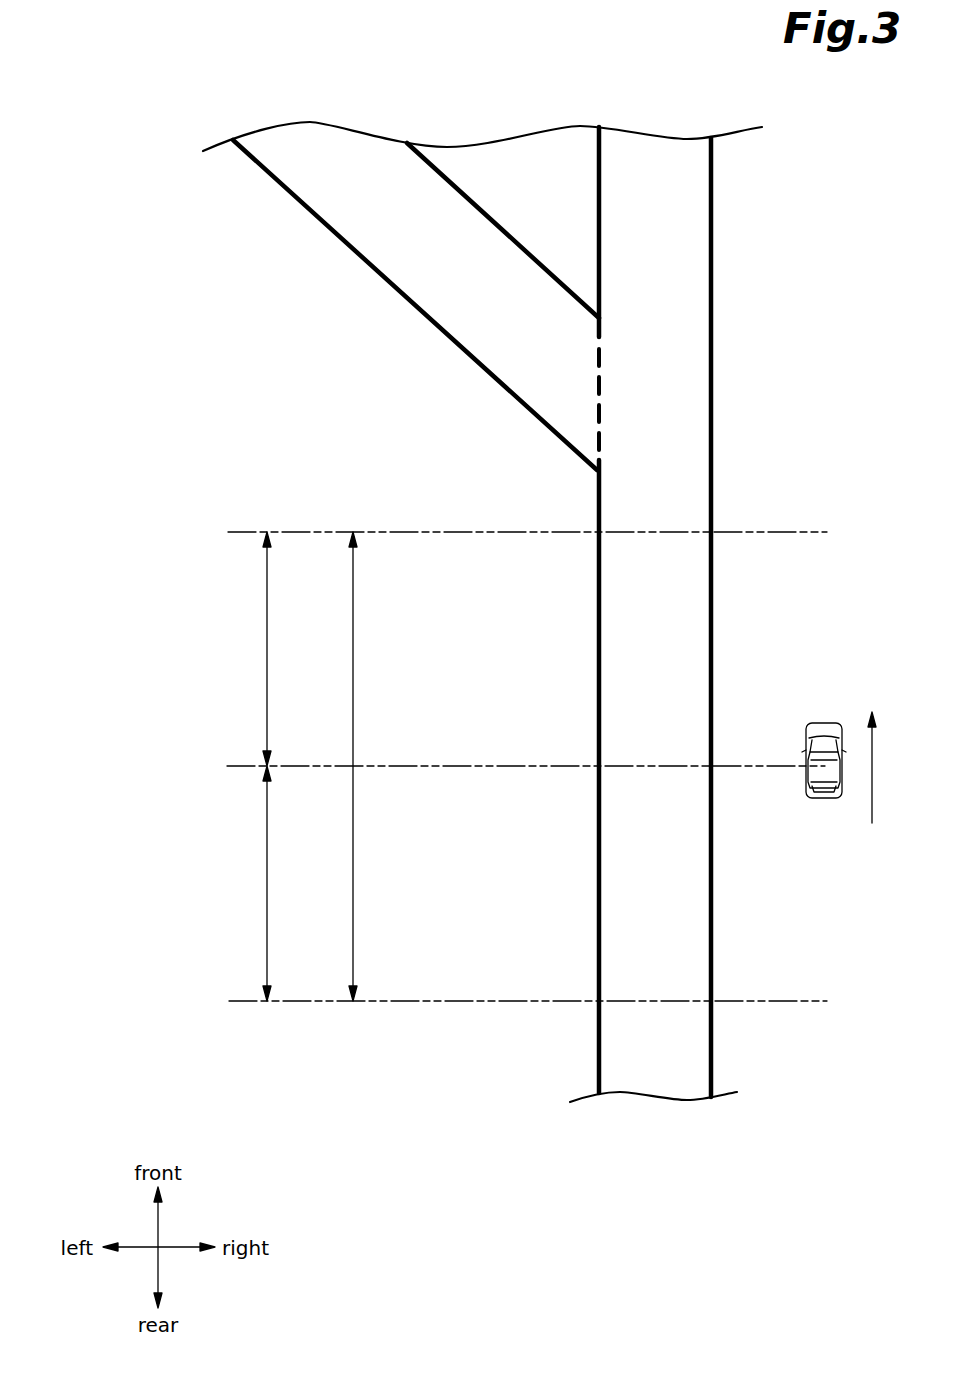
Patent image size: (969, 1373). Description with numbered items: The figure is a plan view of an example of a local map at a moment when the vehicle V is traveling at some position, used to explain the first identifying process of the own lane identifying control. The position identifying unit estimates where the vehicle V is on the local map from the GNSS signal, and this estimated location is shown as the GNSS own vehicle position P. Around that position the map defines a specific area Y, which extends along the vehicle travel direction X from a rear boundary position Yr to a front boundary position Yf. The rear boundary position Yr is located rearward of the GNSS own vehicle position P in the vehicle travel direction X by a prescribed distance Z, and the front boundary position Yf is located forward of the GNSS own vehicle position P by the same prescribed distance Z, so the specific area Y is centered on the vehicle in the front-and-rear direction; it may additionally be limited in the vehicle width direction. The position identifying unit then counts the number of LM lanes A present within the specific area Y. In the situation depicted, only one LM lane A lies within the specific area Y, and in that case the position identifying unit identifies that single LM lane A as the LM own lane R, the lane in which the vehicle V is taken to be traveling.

The LM own lane R is at (653, 608).
The LM lane A is at (610, 502).
The vehicle V is at (825, 722).
The GNSS own vehicle position P is at (820, 814).
The vehicle travel direction X is at (871, 780).
The specific area Y is at (365, 766).
The prescribed distance Z is at (280, 766).
The front boundary position Yf is at (510, 531).
The rear boundary position Yr is at (513, 1002).